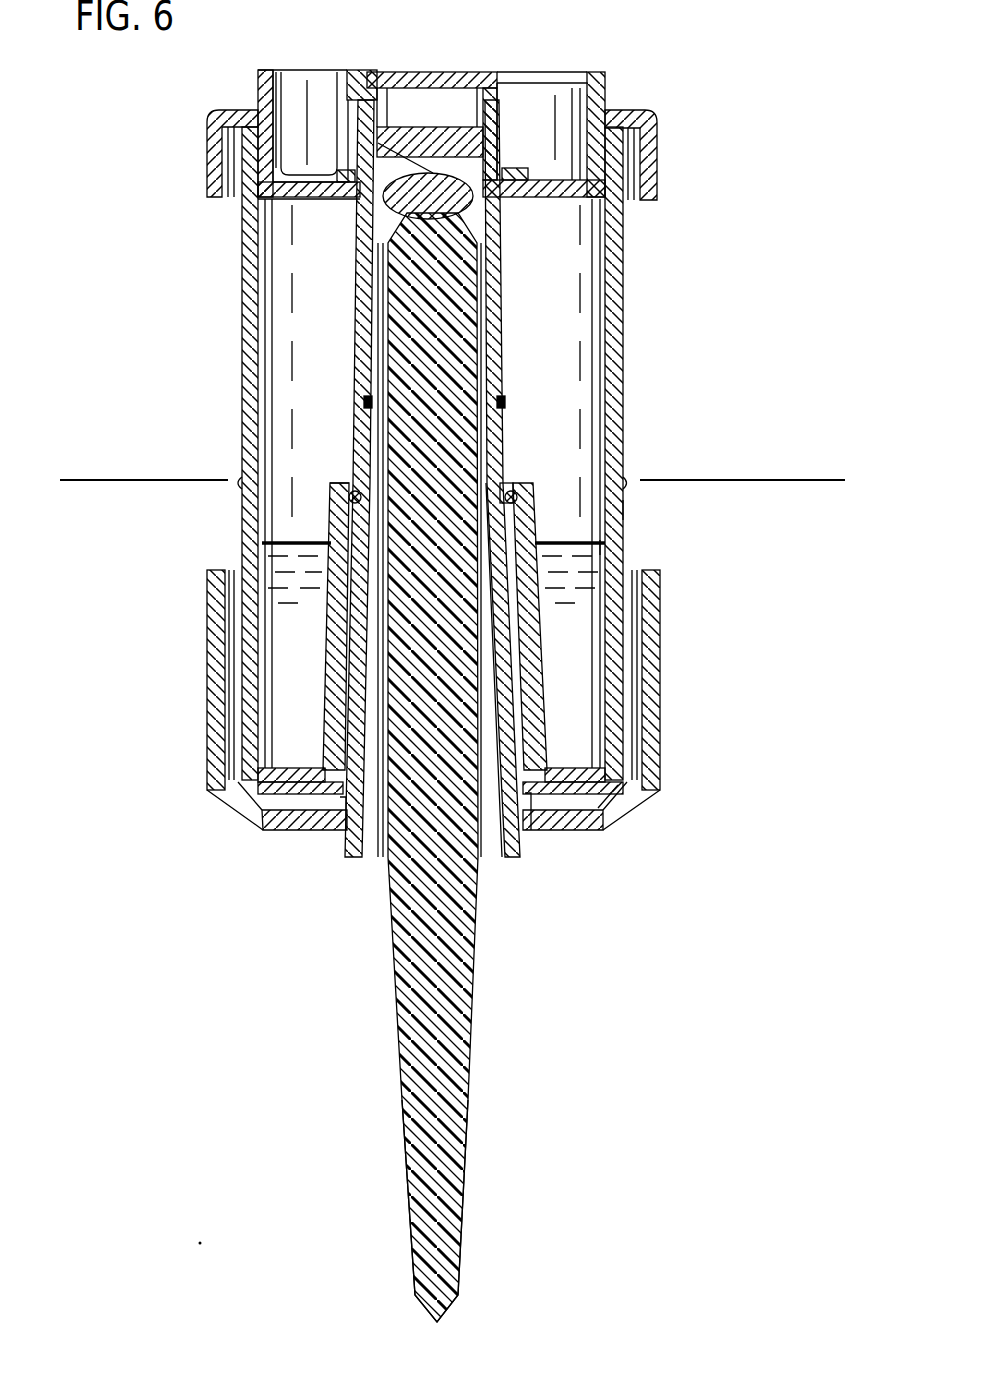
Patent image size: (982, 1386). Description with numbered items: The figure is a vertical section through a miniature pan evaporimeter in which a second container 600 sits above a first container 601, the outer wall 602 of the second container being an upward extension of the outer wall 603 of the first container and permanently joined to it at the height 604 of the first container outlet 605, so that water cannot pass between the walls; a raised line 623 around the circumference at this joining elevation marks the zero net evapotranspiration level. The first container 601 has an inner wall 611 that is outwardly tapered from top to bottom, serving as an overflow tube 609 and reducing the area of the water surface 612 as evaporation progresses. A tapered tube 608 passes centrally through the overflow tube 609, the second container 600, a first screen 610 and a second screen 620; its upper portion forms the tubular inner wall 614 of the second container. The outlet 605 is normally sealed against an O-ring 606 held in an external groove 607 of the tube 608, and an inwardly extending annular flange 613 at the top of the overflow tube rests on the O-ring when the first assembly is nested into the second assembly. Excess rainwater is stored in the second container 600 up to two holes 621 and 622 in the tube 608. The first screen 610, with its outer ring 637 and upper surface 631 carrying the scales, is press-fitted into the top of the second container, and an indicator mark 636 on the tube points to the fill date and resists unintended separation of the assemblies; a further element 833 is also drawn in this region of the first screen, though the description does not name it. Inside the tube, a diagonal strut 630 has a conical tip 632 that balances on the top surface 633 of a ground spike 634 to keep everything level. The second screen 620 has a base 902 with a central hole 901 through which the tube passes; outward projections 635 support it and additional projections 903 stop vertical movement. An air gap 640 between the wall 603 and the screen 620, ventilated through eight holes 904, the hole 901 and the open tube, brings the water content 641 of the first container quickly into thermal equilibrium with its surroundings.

The second container 600 is at (627, 300).
The first container 601 is at (628, 510).
The outer wall of the second container 602 is at (625, 232).
The outer wall of the first container 603 is at (608, 547).
The height of the first container outlet 604 is at (800, 478).
The first container outlet 605 is at (517, 495).
The O-ring 606 is at (530, 497).
The external groove 607 is at (502, 495).
The tapered tube 608 is at (358, 326).
The overflow tube 609 is at (330, 527).
The first screen 610 is at (205, 157).
The inner wall of the first container 611 is at (323, 594).
The water surface 612 is at (283, 541).
The annular constriction or flange 613 is at (352, 492).
The inner wall of the second container 614 is at (502, 310).
The second screen 620 is at (207, 690).
The hole 621 is at (363, 400).
The hole 622 is at (505, 403).
The raised line 623 is at (235, 480).
The diagonal strut 630 is at (410, 127).
The upper surface of the first screen 631 is at (632, 110).
The conical tip 632 is at (425, 173).
The top surface of the ground spike 633 is at (500, 133).
The ground spike 634 is at (447, 1157).
The outward projections 635 is at (343, 856).
The indicator mark 636 is at (356, 70).
The outer ring 637 is at (258, 86).
The air gap 640 is at (240, 780).
The water content 641 is at (580, 622).
The plug 833 is at (347, 172).
The central hole 901 is at (373, 857).
The base 902 is at (590, 830).
The additional projections 903 is at (548, 830).
The holes 904 is at (625, 808).